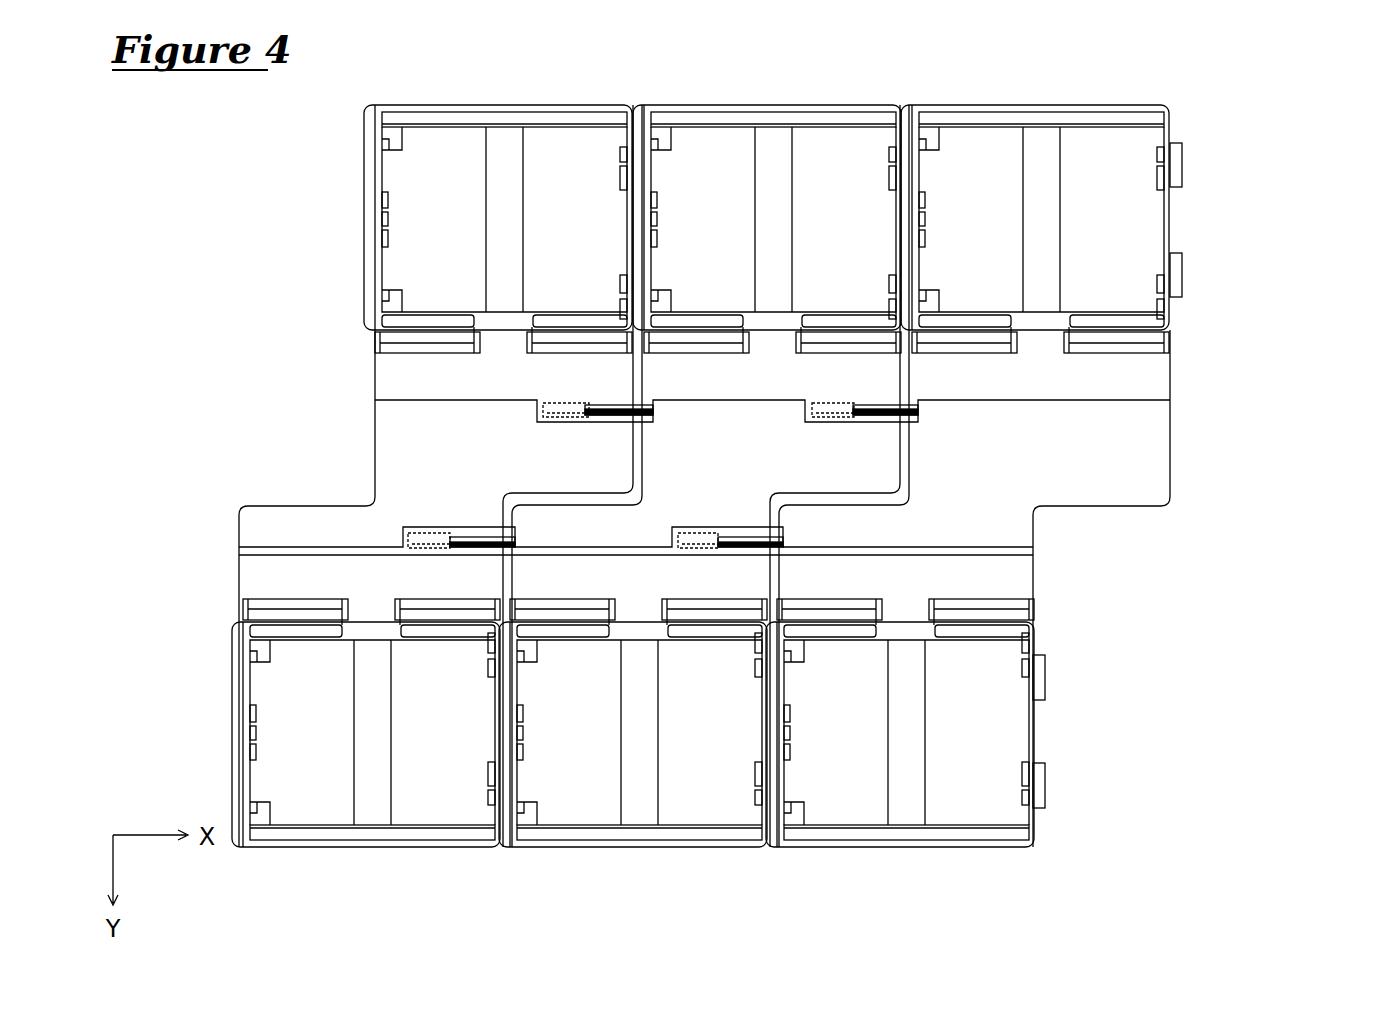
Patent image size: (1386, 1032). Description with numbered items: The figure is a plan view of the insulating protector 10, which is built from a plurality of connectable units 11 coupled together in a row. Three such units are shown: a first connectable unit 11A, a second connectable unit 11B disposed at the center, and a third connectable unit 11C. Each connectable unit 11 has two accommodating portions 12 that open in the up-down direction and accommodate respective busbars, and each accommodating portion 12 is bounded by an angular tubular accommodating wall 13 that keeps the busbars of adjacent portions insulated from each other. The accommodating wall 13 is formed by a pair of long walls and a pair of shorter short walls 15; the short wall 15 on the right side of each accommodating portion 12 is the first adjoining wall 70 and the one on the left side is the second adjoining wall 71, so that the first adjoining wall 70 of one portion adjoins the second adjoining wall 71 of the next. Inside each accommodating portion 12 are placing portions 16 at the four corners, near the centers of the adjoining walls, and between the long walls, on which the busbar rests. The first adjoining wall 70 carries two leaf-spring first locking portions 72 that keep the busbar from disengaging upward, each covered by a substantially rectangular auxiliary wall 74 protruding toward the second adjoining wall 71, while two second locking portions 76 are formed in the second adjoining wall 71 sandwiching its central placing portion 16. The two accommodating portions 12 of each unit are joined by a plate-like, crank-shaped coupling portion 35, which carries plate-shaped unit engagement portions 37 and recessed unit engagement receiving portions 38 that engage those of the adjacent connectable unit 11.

The insulating protector 10 is at (1160, 441).
The connectable unit 11 is at (733, 532).
The first connectable unit 11A is at (915, 830).
The second connectable unit 11B is at (668, 830).
The third connectable unit 11C is at (418, 830).
The accommodating portion 12 is at (467, 112).
The accommodating wall 13 is at (505, 107).
The short wall 15 is at (791, 423).
The placing portion 16 is at (665, 296).
The coupling portion 35 is at (430, 455).
The unit engagement portion 37 is at (588, 410).
The unit engagement receiving portion 38 is at (560, 422).
The first adjoining wall 70 is at (887, 165).
The second adjoining wall 71 is at (661, 298).
The first locking portion 72 is at (890, 300).
The auxiliary wall 74 is at (1180, 175).
The second locking portion 76 is at (648, 237).